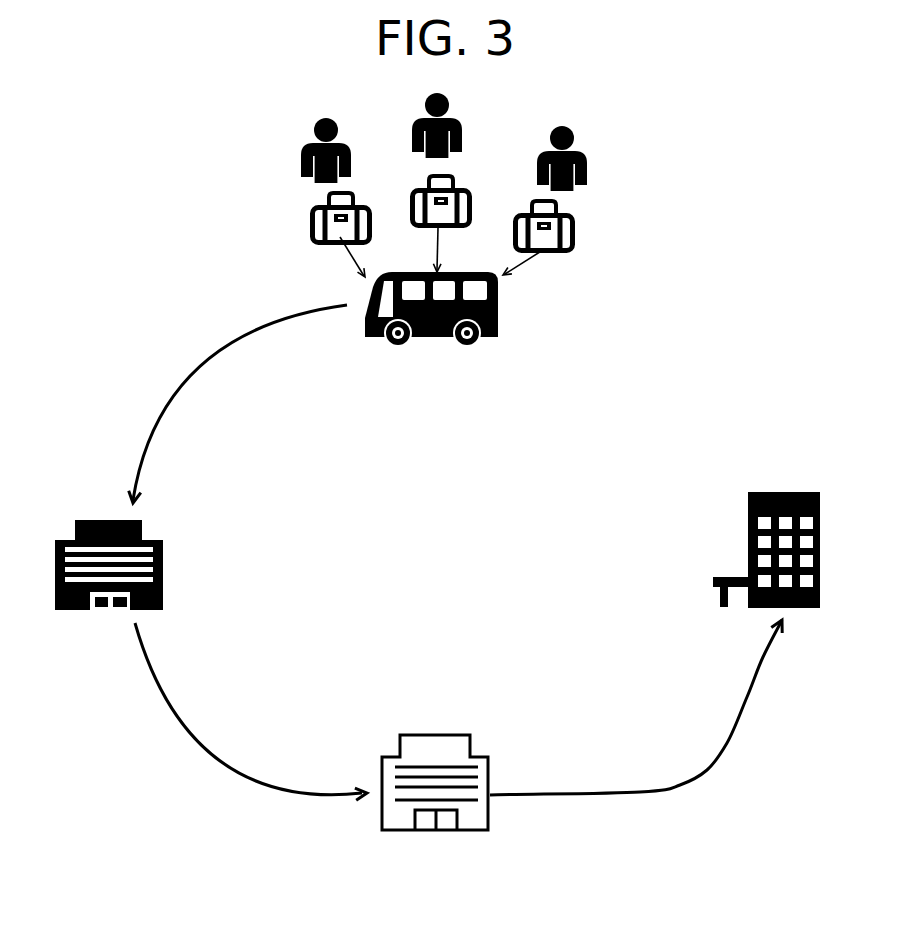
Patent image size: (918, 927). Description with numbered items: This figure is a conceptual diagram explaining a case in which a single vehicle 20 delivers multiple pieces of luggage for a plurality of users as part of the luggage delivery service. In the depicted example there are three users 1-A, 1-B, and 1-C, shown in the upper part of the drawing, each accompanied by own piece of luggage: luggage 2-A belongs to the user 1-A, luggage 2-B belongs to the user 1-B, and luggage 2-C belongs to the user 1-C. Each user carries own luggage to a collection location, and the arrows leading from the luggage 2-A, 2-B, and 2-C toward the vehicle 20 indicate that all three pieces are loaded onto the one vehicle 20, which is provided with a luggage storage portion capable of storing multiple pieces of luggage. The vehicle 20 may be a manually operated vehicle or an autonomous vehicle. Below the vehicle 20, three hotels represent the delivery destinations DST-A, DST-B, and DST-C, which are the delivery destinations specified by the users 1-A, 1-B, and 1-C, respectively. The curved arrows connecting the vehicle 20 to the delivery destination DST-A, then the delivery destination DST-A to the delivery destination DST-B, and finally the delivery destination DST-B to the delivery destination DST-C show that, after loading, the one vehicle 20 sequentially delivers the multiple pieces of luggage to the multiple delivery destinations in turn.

The user 1-A is at (301, 160).
The user 1-B is at (452, 112).
The user 1-C is at (588, 163).
The luggage 2-A is at (308, 222).
The luggage 2-B is at (458, 187).
The luggage 2-C is at (576, 228).
The vehicle 20 is at (498, 302).
The delivery destination DST-A is at (163, 567).
The delivery destination DST-B is at (430, 735).
The delivery destination DST-C is at (748, 536).